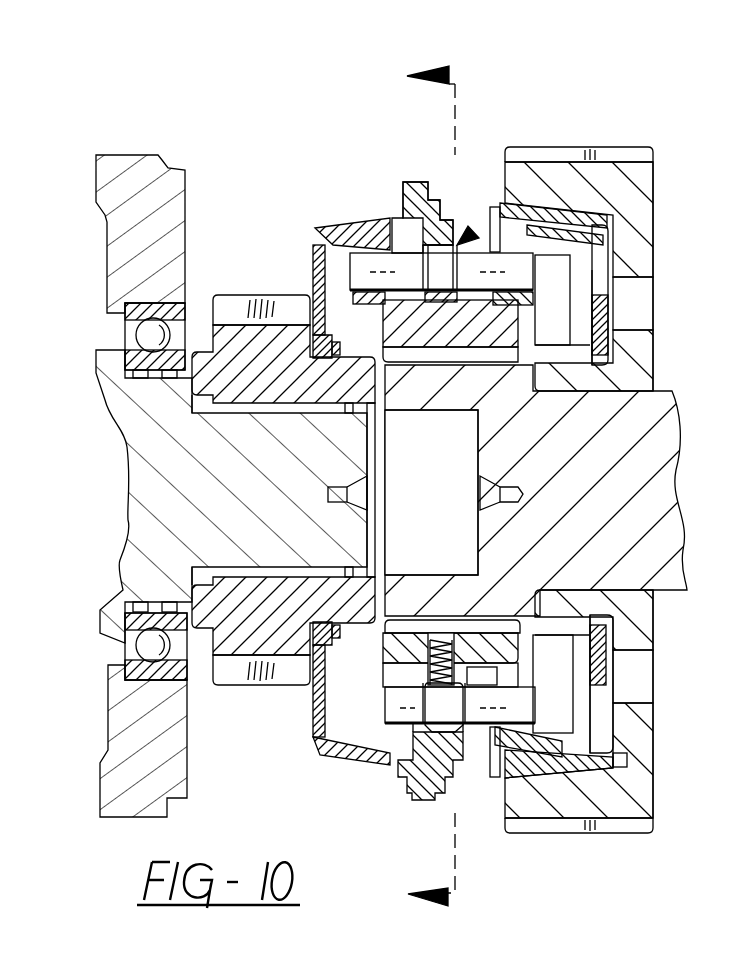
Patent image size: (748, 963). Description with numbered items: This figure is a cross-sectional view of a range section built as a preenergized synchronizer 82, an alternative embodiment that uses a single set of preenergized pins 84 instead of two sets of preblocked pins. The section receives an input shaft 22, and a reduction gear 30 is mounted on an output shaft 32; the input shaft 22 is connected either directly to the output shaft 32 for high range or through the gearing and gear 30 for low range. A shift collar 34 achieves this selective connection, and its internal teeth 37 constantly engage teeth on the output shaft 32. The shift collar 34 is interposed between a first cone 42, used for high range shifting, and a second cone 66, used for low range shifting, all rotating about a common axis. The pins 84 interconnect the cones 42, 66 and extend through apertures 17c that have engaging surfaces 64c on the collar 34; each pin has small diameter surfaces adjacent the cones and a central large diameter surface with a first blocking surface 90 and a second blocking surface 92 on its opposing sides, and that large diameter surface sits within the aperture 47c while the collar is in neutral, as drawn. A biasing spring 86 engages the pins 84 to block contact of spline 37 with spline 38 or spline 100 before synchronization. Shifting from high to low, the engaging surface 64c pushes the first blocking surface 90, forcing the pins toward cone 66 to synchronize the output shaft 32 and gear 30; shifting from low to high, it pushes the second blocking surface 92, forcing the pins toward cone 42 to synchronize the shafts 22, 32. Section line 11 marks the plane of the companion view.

The section line 11 is at (455, 490).
The input shaft 22 is at (132, 527).
The gear 30 is at (640, 265).
The output shaft 32 is at (672, 480).
The shift collar 34 is at (420, 190).
The internal teeth 37 is at (485, 355).
The spline 38 is at (350, 357).
The first cone 42 is at (349, 760).
The aperture 47c is at (440, 697).
The engaging surface 64c is at (382, 300).
The second cone 66 is at (567, 733).
The preenergized synchronizer 82 is at (278, 792).
The preenergized pin 84 is at (465, 235).
The biasing spring 86 is at (483, 740).
The first blocking surface 90 is at (412, 792).
The second blocking surface 92 is at (470, 737).
The spline 100 is at (567, 360).
The aperture 17c is at (437, 638).